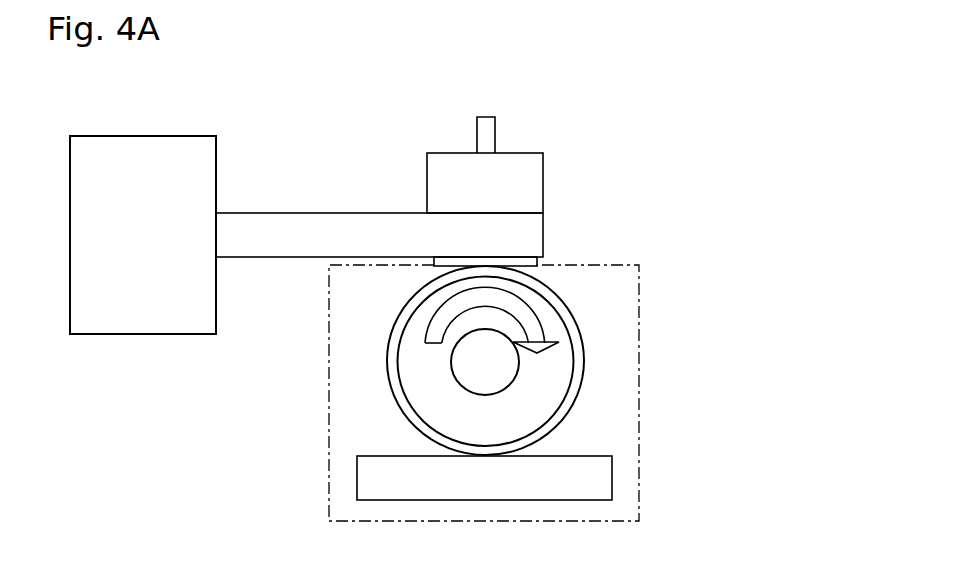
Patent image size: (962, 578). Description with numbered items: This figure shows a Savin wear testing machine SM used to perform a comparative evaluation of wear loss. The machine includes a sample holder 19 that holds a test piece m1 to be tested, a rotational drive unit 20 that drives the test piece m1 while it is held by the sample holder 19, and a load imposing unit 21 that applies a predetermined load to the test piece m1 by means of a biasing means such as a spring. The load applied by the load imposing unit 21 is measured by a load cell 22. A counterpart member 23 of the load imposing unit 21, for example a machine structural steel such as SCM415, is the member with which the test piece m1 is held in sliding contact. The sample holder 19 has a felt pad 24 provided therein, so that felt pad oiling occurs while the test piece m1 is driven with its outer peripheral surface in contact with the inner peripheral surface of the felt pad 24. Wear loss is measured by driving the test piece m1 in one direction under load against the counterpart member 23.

The Savin wear testing machine SM is at (679, 158).
The sample holder 19 is at (639, 307).
The rotational drive unit 20 is at (473, 373).
The load imposing unit 21 is at (563, 151).
The load cell 22 is at (70, 200).
The counterpart member 23 is at (540, 262).
The felt pad 24 is at (357, 476).
The test piece m1 is at (556, 376).